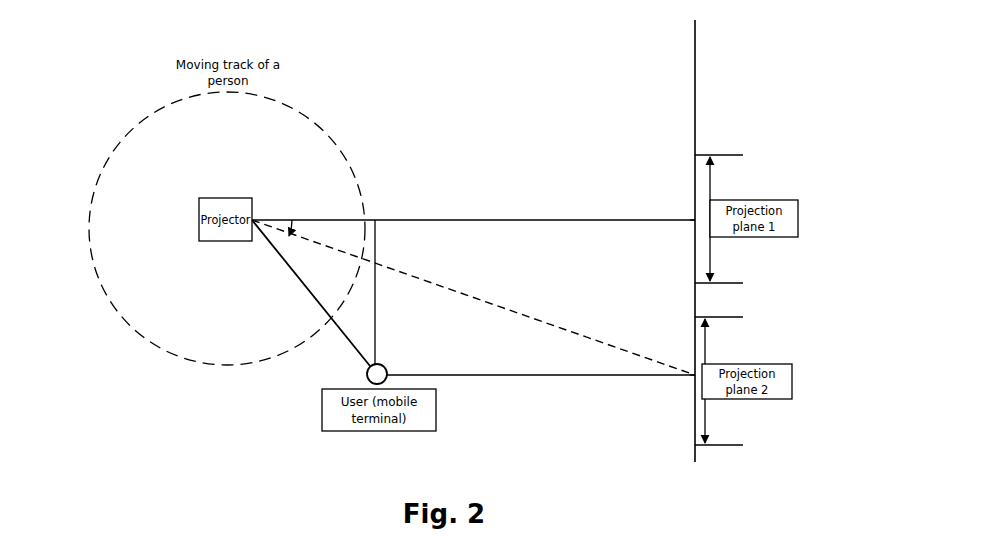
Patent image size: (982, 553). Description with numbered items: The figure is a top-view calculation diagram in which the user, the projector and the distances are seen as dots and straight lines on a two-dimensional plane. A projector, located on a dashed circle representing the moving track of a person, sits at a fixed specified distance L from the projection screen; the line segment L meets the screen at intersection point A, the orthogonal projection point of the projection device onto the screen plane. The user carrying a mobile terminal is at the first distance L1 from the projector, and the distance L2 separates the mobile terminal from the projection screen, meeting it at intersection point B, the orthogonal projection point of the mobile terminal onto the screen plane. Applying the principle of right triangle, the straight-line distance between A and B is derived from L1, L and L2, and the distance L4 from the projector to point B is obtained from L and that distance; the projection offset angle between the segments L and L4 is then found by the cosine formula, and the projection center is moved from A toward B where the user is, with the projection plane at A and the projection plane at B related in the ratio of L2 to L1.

The specified distance L is at (473, 209).
The first distance L1 is at (311, 293).
The distance between the mobile terminal and the projection screen L2 is at (541, 360).
The distance from projector to point B L4 is at (473, 297).
The intersection point A is at (685, 209).
The intersection point B is at (678, 390).